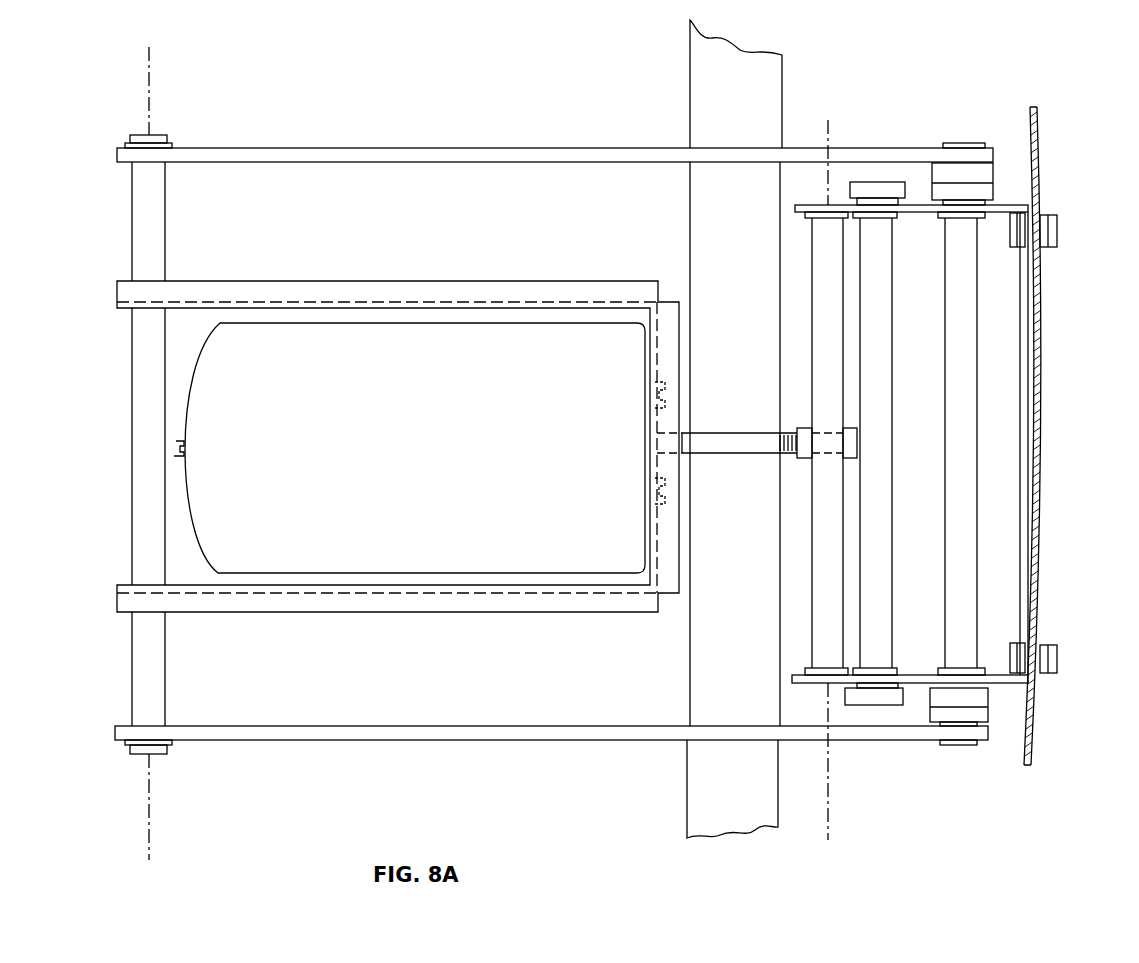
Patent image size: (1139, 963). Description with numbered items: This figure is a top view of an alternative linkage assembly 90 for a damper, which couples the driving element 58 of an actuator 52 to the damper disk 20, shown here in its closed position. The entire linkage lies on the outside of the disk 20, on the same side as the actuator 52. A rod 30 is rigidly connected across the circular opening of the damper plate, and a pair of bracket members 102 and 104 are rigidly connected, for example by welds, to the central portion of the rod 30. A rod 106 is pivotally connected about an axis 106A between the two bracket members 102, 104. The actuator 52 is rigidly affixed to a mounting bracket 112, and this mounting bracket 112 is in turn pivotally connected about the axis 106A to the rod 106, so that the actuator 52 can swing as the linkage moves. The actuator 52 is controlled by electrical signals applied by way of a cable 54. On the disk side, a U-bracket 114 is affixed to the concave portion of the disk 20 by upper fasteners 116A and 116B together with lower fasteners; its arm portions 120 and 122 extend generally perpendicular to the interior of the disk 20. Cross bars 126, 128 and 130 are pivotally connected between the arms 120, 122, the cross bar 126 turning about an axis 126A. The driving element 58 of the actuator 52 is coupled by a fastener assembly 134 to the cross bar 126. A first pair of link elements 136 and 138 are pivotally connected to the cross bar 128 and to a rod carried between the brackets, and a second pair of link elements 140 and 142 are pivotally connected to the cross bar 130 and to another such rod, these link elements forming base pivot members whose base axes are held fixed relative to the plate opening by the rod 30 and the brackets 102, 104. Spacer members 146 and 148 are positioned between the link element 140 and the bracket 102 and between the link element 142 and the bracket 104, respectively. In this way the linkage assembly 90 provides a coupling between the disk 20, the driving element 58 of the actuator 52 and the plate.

The disk 20 is at (1033, 112).
The rod 30 is at (685, 793).
The actuator 52 is at (437, 321).
The cable 54 is at (178, 440).
The driving element 58 is at (730, 416).
The linkage assembly 90 is at (537, 100).
The bracket 102 is at (410, 148).
The bracket 104 is at (445, 742).
The rod 106 is at (140, 217).
The axis 106A is at (143, 788).
The mounting bracket 112 is at (292, 279).
The U-bracket 114 is at (1025, 437).
The upper fastener 116A is at (1058, 660).
The upper fastener 116B is at (1058, 247).
The arm portion 120 is at (922, 213).
The arm portion 122 is at (938, 672).
The cross bar 126 is at (823, 242).
The axis 126A is at (822, 128).
The cross bar 128 is at (878, 360).
The cross bar 130 is at (962, 333).
The fastener assembly 134 is at (794, 466).
The link element 136 is at (867, 188).
The link element 138 is at (888, 697).
The link element 140 is at (980, 190).
The link element 142 is at (945, 698).
The spacer member 146 is at (932, 176).
The spacer member 148 is at (970, 713).